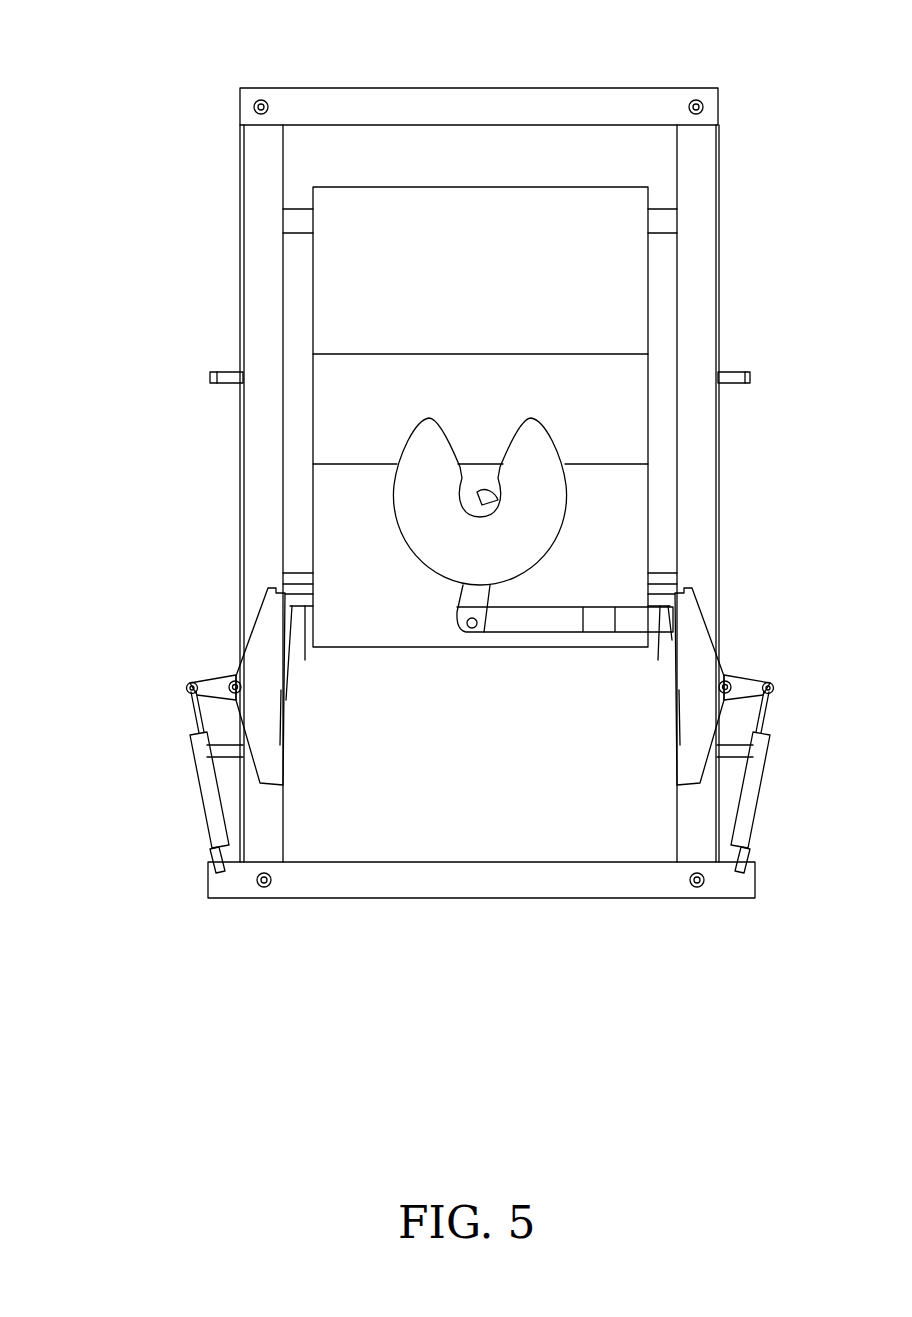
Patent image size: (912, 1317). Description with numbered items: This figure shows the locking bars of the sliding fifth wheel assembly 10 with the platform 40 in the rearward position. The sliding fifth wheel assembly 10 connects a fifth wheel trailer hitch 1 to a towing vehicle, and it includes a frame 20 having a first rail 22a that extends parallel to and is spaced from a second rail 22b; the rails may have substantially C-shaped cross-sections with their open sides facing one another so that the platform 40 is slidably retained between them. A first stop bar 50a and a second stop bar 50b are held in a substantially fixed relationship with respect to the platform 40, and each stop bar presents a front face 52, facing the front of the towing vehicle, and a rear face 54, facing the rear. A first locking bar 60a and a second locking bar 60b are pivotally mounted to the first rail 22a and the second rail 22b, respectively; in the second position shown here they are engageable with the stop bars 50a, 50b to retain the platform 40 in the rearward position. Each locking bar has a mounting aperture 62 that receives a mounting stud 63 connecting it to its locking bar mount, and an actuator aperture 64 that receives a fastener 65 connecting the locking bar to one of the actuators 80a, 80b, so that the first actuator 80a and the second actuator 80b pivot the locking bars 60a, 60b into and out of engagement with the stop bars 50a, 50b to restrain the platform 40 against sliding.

The fifth wheel trailer hitch 1 is at (563, 422).
The sliding fifth wheel assembly 10 is at (132, 82).
The frame 20 is at (475, 493).
The first rail 22a is at (240, 283).
The second rail 22b is at (720, 154).
The platform 40 is at (662, 207).
The first stop bar 50a is at (290, 587).
The second stop bar 50b is at (670, 590).
The front face 52 is at (305, 650).
The rear face 54 is at (290, 575).
The first locking bar 60a is at (205, 683).
The second locking bar 60b is at (705, 612).
The mounting aperture 62 is at (237, 680).
The mounting stud 63 is at (238, 668).
The actuator aperture 64 is at (190, 688).
The fastener 65 is at (188, 692).
The first actuator 80a is at (202, 787).
The second actuator 80b is at (760, 790).